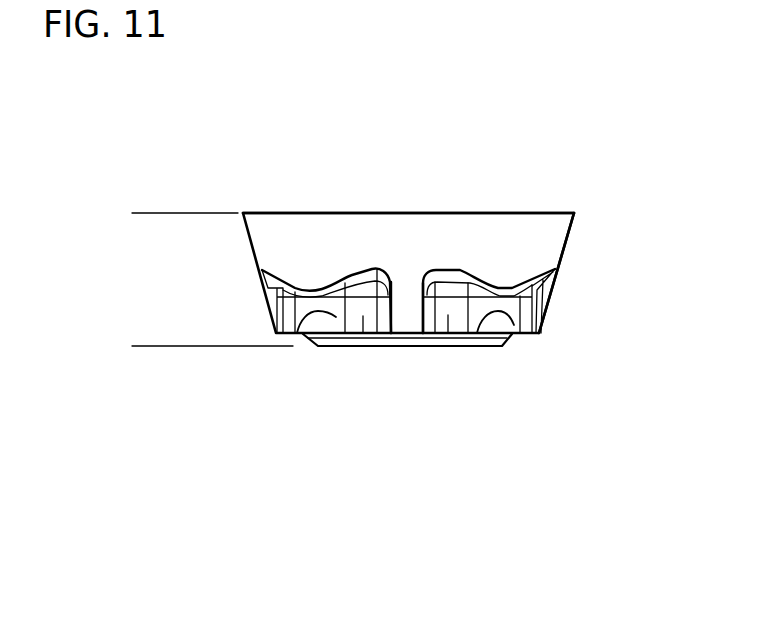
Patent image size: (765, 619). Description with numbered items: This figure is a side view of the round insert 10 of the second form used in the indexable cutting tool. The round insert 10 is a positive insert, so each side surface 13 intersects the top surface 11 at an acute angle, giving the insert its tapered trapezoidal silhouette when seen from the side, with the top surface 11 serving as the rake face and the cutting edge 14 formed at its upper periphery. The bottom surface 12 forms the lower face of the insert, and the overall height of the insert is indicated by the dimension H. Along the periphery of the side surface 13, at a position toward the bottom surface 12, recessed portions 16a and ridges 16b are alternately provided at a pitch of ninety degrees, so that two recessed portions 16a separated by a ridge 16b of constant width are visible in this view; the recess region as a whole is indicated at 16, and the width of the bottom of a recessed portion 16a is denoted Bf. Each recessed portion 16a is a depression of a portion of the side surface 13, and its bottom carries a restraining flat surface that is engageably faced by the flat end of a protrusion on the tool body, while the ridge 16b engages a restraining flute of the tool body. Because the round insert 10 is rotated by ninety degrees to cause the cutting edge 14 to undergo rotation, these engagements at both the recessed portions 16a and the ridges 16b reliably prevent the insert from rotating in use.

The round insert 10 is at (508, 200).
The top surface 11 is at (293, 213).
The bottom surface 12 is at (467, 340).
The side surface 13 is at (543, 242).
The cutting edge 14 is at (571, 212).
The recess (chip breaker groove) 16 is at (518, 307).
The recessed portion 16a is at (334, 320).
The ridge 16b is at (410, 298).
The bottom width of recess Bf is at (448, 315).
The height of insert H is at (139, 213).